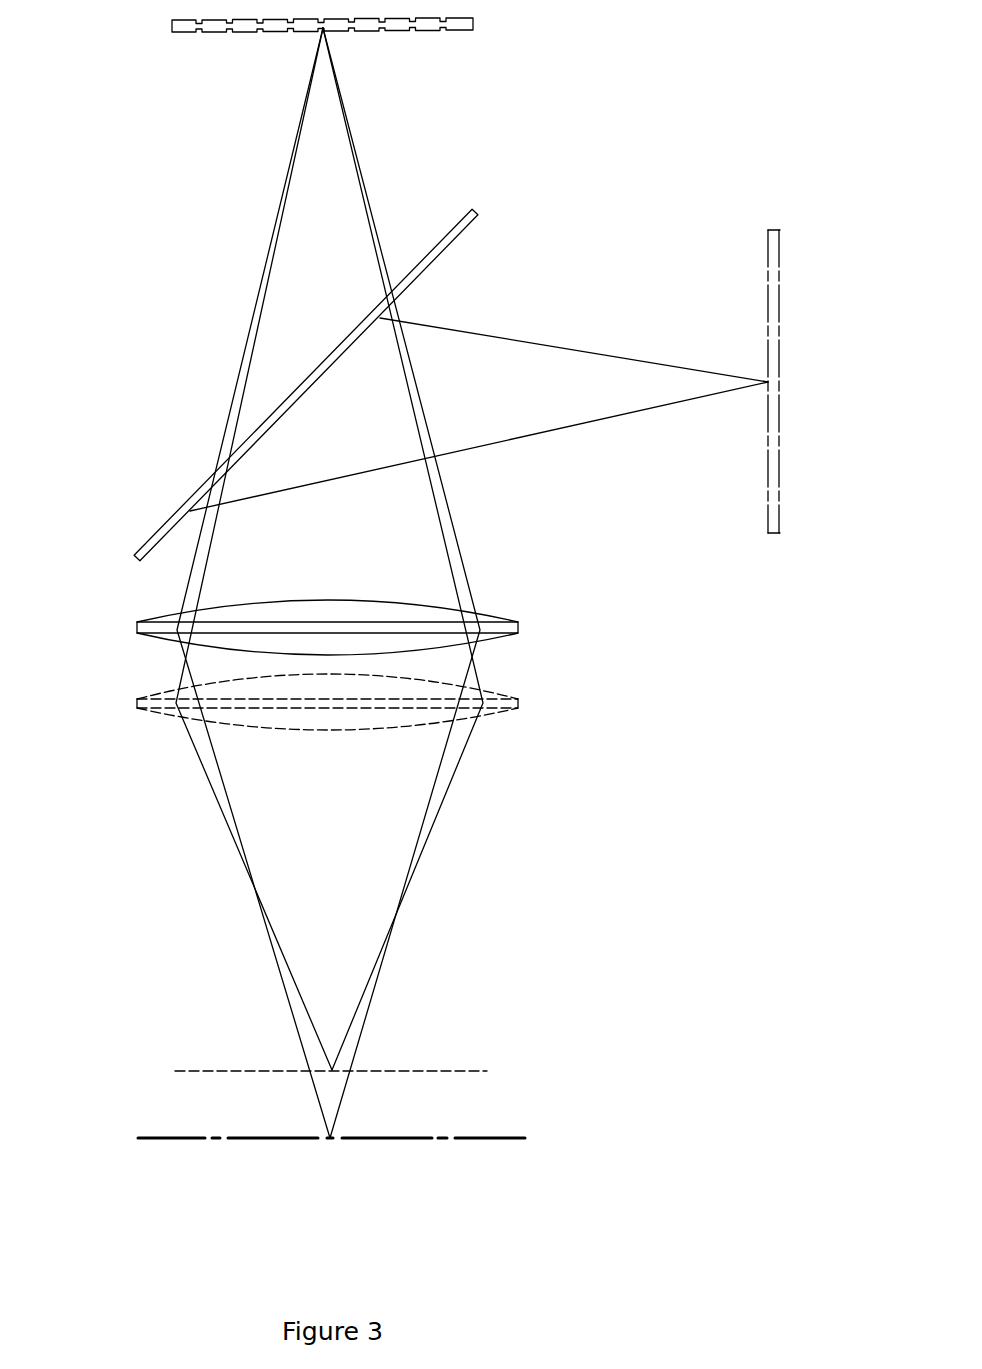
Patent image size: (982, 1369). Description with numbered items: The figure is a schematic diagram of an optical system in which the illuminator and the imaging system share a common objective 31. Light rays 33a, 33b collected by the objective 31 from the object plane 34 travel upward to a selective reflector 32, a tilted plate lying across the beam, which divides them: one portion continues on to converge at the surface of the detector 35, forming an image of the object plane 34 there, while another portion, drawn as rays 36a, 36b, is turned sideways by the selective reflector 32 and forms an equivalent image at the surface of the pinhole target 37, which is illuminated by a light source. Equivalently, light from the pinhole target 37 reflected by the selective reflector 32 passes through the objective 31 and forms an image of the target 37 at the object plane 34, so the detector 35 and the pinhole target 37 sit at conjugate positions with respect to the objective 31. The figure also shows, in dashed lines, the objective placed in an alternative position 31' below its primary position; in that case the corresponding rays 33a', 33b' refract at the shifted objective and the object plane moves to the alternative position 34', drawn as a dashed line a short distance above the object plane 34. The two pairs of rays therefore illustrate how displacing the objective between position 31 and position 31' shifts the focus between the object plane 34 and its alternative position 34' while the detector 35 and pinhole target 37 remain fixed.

The objective 31 is at (307, 636).
The alternative position of objective 31' is at (296, 718).
The selective reflector 32 is at (482, 206).
The light ray 33a is at (210, 583).
The light ray for alternative objective position 33a' is at (254, 549).
The light ray 33b is at (436, 583).
The light ray for alternative objective position 33b' is at (403, 549).
The object plane 34 is at (314, 1161).
The alternative position of object plane 34' is at (304, 1087).
The detector 35 is at (182, 34).
The light ray 36a is at (533, 337).
The light ray 36b is at (563, 432).
The pinhole target 37 is at (777, 533).